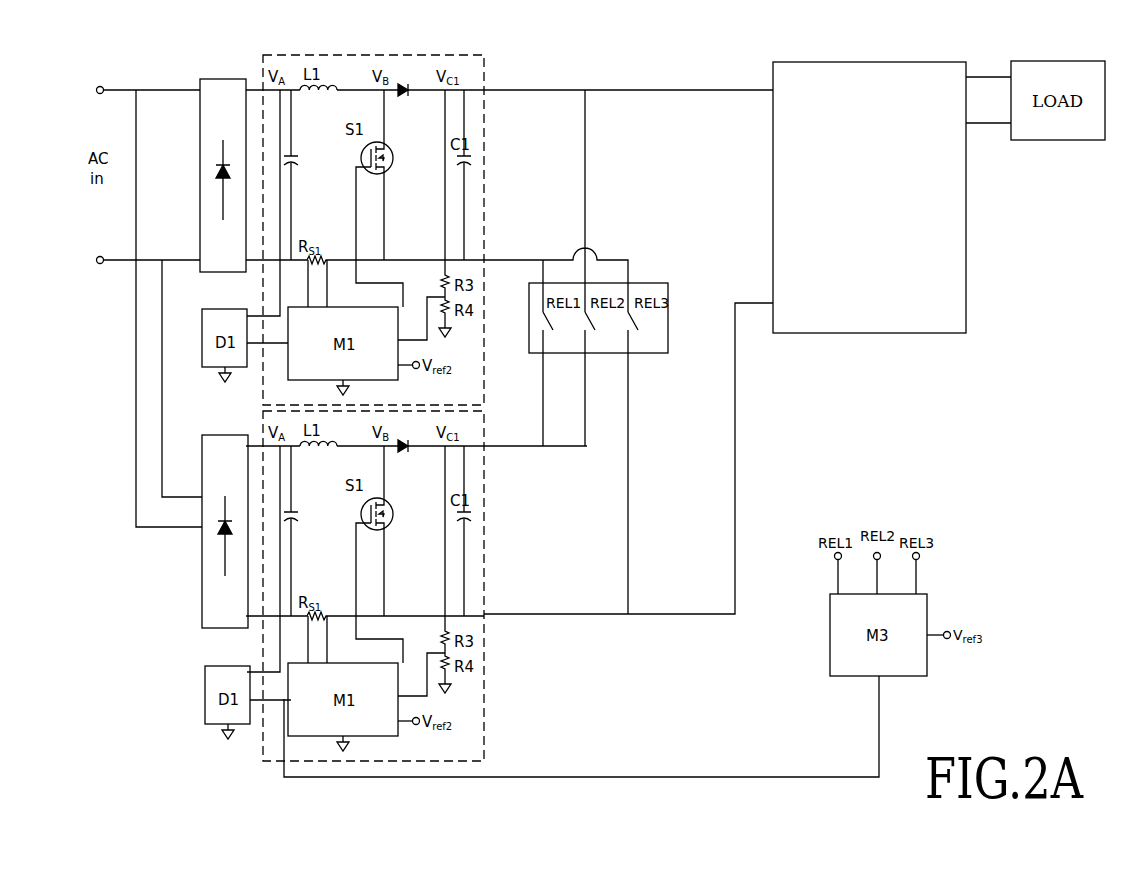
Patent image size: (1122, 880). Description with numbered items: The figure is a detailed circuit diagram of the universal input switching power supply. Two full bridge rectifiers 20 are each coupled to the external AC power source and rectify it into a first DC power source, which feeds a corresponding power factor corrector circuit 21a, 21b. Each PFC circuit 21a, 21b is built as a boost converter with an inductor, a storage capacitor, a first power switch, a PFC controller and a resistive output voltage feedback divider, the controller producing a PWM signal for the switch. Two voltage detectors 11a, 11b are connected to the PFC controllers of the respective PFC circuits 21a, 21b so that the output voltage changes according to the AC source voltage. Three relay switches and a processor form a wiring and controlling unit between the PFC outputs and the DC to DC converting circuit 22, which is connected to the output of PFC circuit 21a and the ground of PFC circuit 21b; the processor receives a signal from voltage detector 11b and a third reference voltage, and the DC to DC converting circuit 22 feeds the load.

The full bridge rectifier 20 is at (227, 80).
The voltage detector 11a is at (237, 315).
The voltage detector 11b is at (213, 685).
The power factor corrector circuit 21a is at (483, 73).
The power factor corrector circuit 21b is at (488, 705).
The DC to DC converting circuit 22 is at (901, 317).